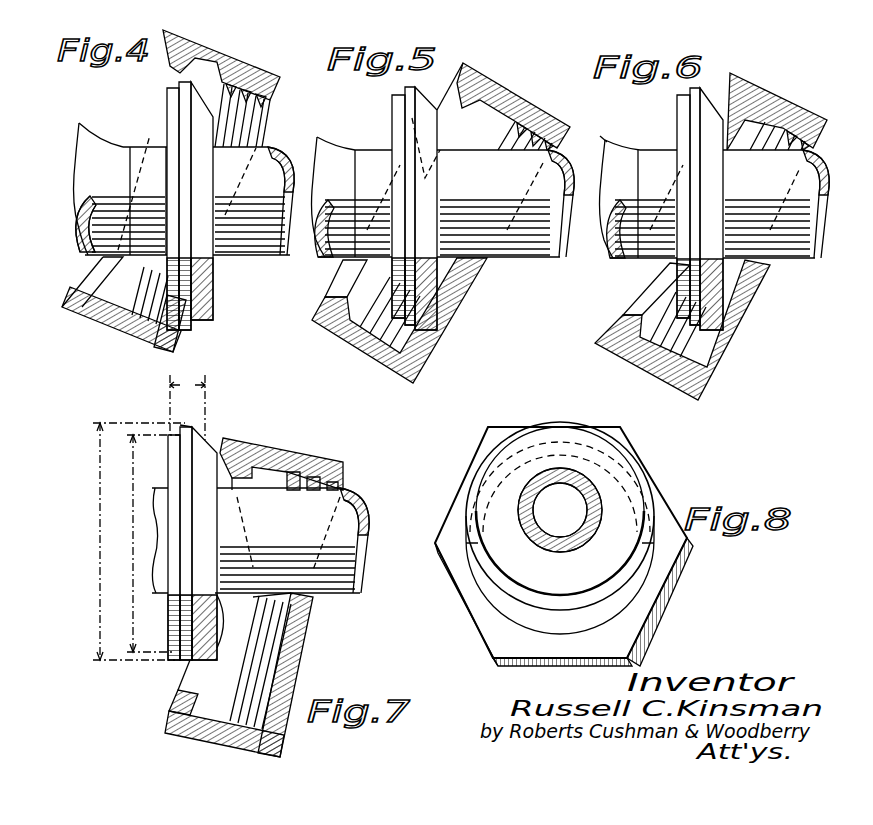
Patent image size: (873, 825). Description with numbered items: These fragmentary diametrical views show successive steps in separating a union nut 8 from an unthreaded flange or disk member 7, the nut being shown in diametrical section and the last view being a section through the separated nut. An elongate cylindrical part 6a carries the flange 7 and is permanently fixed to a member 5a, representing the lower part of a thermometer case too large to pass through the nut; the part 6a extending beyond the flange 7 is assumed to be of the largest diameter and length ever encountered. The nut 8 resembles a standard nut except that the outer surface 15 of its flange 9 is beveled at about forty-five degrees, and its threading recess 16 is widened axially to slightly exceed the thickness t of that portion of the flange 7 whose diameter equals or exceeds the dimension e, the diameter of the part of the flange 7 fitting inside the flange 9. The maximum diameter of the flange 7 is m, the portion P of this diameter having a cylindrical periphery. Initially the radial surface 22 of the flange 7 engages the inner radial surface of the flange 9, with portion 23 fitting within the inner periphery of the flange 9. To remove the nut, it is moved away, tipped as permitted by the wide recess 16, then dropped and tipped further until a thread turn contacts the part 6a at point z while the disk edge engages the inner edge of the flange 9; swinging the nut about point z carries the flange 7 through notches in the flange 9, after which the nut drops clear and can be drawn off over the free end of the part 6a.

In FIG. 4, the member 5a is at (86, 137).
In FIG. 5, the member 5a is at (325, 152).
In FIG. 6, the member 5a is at (612, 152).
In FIG. 4, the elongate cylindrical part 6a is at (243, 230).
In FIG. 5, the elongate cylindrical part 6a is at (460, 160).
In FIG. 6, the elongate cylindrical part 6a is at (760, 152).
In FIG. 7, the elongate cylindrical part 6a is at (330, 585).
In FIG. 4, the unthreaded flange or disk member 7 is at (184, 130).
In FIG. 4, the union nut 8 is at (216, 74).
In FIG. 5, the union nut 8 is at (345, 340).
In FIG. 6, the union nut 8 is at (762, 120).
In FIG. 7, the union nut 8 is at (266, 448).
In FIG. 8, the union nut 8 is at (486, 447).
In FIG. 4, the flange 9 is at (186, 62).
In FIG. 5, the flange 9 is at (340, 305).
In FIG. 6, the flange 9 is at (750, 92).
In FIG. 7, the flange 9 is at (236, 468).
In FIG. 4, the outer surface 15 is at (166, 55).
In FIG. 5, the outer surface 15 is at (335, 298).
In FIG. 6, the outer surface 15 is at (716, 94).
In FIG. 4, the threading recess 16 is at (255, 76).
In FIG. 5, the threading recess 16 is at (368, 350).
In FIG. 6, the threading recess 16 is at (788, 126).
In FIG. 7, the threading recess 16 is at (292, 474).
In FIG. 5, the radial surface 22 is at (403, 92).
In FIG. 6, the radial surface 22 is at (683, 94).
In FIG. 5, the portion 23 is at (397, 126).
In FIG. 6, the portion 23 is at (682, 121).
In FIG. 8, the portion 23 is at (625, 490).
In FIG. 6, the point z is at (593, 128).
In FIG. 7, the portion of maximum diameter P is at (185, 425).
In FIG. 7, the thickness t is at (187, 406).
In FIG. 7, the maximum diameter m is at (137, 541).
In FIG. 7, the diameter e is at (153, 543).